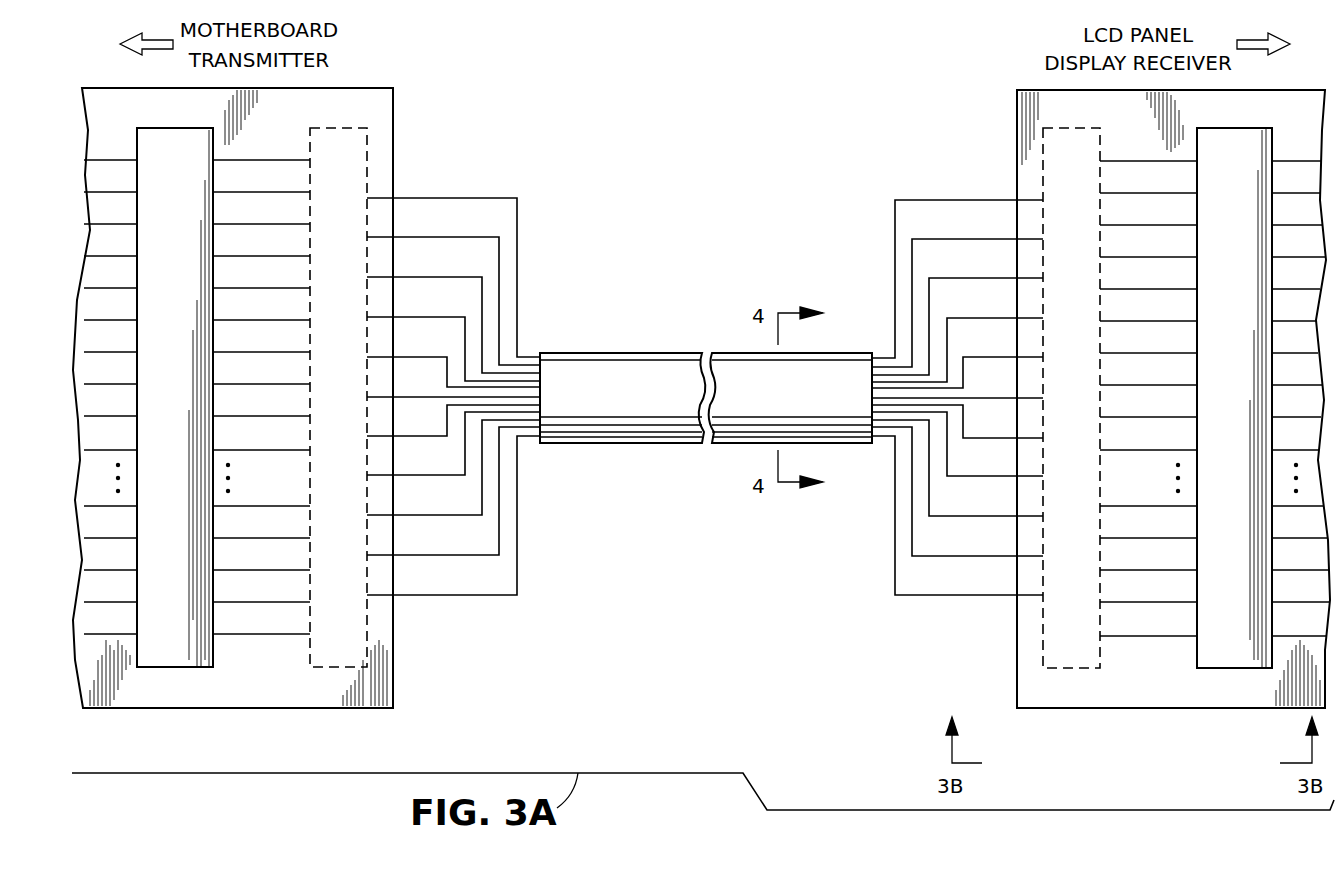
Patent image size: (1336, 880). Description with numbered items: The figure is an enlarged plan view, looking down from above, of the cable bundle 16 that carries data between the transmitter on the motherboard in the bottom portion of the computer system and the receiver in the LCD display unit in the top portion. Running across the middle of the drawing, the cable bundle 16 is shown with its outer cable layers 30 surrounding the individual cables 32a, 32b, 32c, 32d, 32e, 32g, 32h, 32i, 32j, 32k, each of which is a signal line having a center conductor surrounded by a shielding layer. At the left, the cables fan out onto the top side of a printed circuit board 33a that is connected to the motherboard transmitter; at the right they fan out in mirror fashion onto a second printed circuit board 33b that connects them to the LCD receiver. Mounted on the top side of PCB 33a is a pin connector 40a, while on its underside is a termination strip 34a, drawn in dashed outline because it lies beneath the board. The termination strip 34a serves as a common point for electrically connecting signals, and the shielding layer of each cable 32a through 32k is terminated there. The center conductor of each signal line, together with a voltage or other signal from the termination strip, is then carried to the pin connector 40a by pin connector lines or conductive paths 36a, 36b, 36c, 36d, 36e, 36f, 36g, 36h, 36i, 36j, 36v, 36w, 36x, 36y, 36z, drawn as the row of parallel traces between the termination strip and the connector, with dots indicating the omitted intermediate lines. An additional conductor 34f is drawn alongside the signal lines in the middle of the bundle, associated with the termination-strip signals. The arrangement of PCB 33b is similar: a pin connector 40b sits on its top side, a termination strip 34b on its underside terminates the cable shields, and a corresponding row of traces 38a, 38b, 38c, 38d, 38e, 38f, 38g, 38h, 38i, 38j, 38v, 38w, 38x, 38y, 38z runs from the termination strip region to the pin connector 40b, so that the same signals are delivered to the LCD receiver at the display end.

The cable bundle 16 is at (460, 52).
The outer cable layers 30 is at (652, 342).
The cable 32a is at (427, 197).
The cable 32b is at (418, 236).
The cable 32c is at (412, 277).
The cable 32d is at (405, 317).
The cable 32e is at (398, 357).
The cable 32g is at (398, 438).
The cable 32h is at (407, 477).
The cable 32i is at (413, 517).
The cable 32j is at (420, 557).
The cable 32k is at (427, 597).
The printed circuit board 33a is at (357, 88).
The printed circuit board 33b is at (1043, 90).
The termination strip 34a is at (367, 152).
The termination strip 34b is at (1043, 155).
The ground wire 34f is at (416, 397).
The pin connector line 36a is at (235, 157).
The pin connector line 36b is at (235, 189).
The pin connector line 36c is at (235, 221).
The pin connector line 36d is at (235, 253).
The pin connector line 36e is at (235, 285).
The pin connector line 36f is at (235, 317).
The pin connector line 36g is at (235, 349).
The pin connector line 36h is at (235, 381).
The pin connector line 36i is at (235, 413).
The pin connector line 36j is at (235, 447).
The pin connector line 36v is at (235, 503).
The pin connector line 36w is at (235, 535).
The pin connector line 36x is at (235, 567).
The pin connector line 36y is at (235, 599).
The pin connector line 36z is at (218, 738).
The trace 38a is at (1177, 160).
The trace 38b is at (1177, 192).
The trace 38c is at (1177, 224).
The trace 38d is at (1177, 256).
The trace 38e is at (1177, 288).
The trace 38f is at (1177, 320).
The trace 38g is at (1177, 352).
The trace 38h is at (1177, 384).
The trace 38i is at (1177, 416).
The trace 38j is at (1177, 449).
The trace 38v is at (1177, 505).
The trace 38w is at (1177, 537).
The trace 38x is at (1177, 569).
The trace 38y is at (1177, 601).
The trace 38z is at (1110, 742).
The pin connector 40a is at (160, 128).
The pin connector 40b is at (1260, 128).